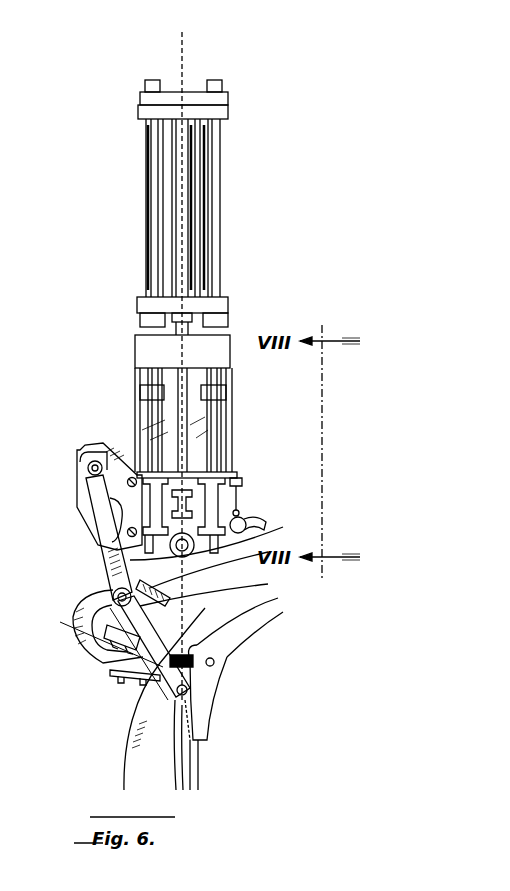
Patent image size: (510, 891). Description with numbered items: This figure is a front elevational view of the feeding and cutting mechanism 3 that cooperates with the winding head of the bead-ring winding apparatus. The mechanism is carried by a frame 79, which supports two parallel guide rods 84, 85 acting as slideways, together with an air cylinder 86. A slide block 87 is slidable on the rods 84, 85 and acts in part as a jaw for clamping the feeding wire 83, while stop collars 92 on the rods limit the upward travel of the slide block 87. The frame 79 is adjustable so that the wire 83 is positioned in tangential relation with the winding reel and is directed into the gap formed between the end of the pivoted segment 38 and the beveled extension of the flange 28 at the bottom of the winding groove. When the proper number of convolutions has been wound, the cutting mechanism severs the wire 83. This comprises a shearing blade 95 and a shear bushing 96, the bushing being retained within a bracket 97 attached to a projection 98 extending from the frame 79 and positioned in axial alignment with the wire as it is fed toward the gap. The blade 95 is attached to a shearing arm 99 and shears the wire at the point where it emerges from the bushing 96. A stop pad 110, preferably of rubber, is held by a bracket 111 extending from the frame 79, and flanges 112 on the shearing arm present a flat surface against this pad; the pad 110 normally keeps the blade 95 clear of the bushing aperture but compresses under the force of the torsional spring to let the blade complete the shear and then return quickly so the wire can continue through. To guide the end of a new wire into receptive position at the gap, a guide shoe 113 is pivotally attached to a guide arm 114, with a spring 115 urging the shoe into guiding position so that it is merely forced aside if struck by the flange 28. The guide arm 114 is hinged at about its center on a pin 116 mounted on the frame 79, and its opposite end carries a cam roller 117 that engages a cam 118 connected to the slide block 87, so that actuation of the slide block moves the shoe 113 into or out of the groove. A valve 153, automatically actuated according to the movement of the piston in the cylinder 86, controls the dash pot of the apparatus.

The feeding and cutting mechanism 3 is at (104, 388).
The flange 28 is at (133, 767).
The segment 38 is at (207, 731).
The frame 79 is at (136, 349).
The feeding wire 83 is at (181, 57).
The guide rod 84 is at (148, 218).
The guide rod 85 is at (212, 222).
The air cylinder 86 is at (170, 153).
The slide block 87 is at (228, 474).
The stop collars 92 is at (226, 391).
The shearing blade 95 is at (137, 692).
The shear bushing 96 is at (220, 648).
The bracket 97 is at (103, 660).
The projection 98 is at (82, 620).
The shearing arm 99 is at (72, 630).
The stop pad 110 is at (182, 586).
The bracket 111 is at (183, 609).
The flanges 112 is at (200, 574).
The guide shoe 113 is at (193, 698).
The guide arm 114 is at (104, 520).
The spring 115 is at (176, 695).
The pin 116 is at (114, 593).
The cam roller 117 is at (91, 468).
The cam 118 is at (135, 467).
The valve 153 is at (244, 527).